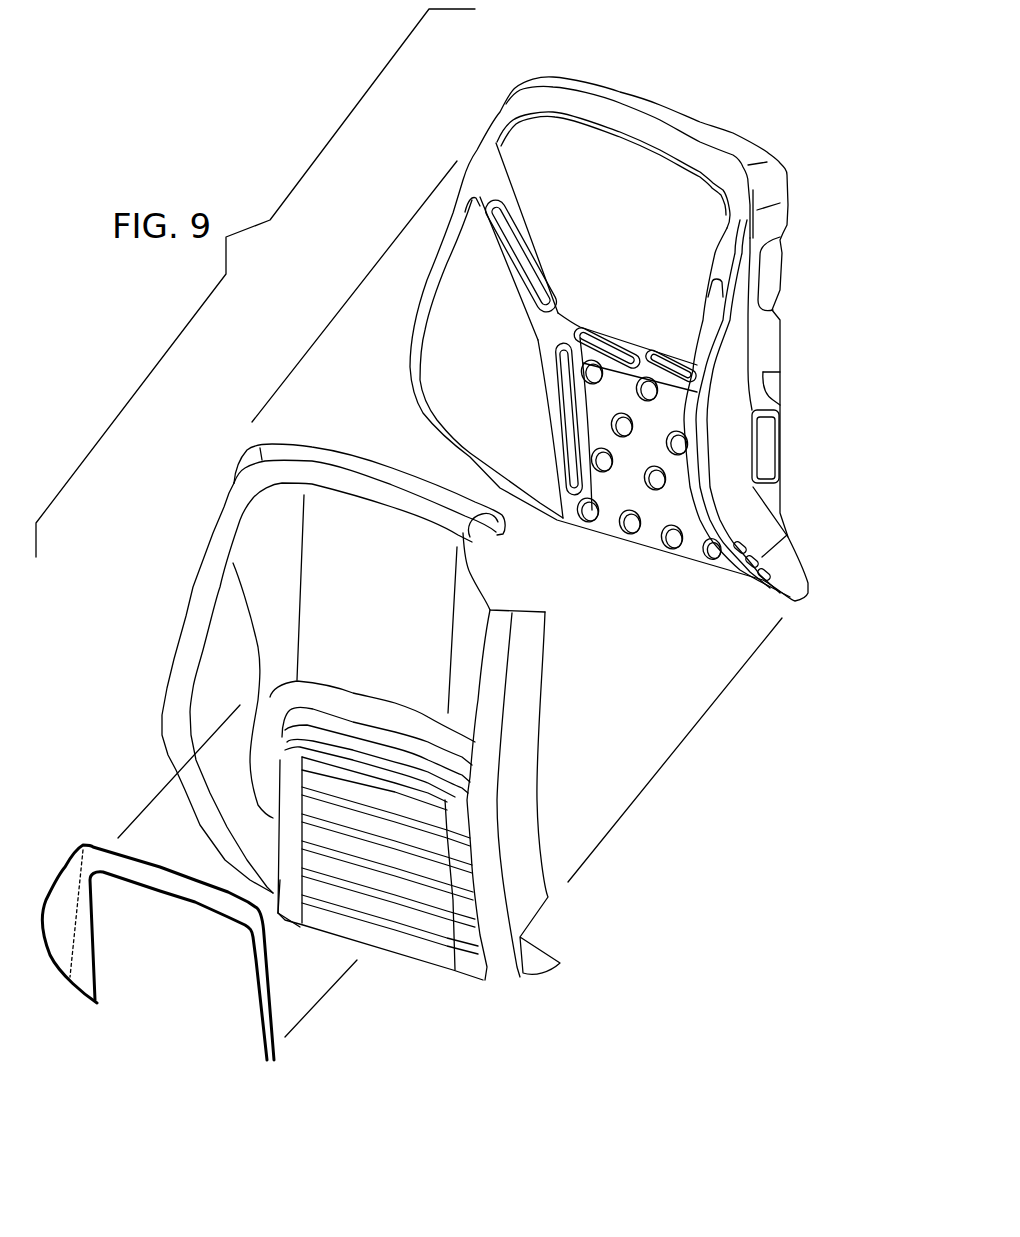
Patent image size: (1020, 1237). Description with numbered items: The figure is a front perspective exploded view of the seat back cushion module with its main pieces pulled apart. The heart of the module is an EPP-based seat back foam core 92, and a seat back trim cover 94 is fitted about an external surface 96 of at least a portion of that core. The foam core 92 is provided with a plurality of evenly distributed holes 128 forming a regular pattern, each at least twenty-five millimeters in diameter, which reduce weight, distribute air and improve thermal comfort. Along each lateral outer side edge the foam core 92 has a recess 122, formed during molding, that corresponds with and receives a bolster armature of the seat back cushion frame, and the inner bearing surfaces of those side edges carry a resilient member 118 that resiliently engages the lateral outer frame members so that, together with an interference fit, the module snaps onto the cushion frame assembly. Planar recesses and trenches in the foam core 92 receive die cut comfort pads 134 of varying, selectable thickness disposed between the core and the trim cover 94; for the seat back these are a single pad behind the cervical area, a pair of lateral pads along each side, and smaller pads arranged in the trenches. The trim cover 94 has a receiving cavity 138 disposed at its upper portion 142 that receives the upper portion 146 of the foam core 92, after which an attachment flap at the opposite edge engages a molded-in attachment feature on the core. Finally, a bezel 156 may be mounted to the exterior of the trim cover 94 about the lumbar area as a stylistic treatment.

The external surface 96 is at (480, 168).
The upper portion 146 is at (627, 120).
The die cut comfort pad 134 is at (678, 187).
The recess 122 is at (762, 372).
The seat back foam core 92 is at (733, 430).
The resilient member 118 is at (767, 457).
The evenly distributed holes 128 is at (667, 547).
The upper portion 142 is at (312, 477).
The receiving cavity 138 is at (480, 540).
The seat back trim cover 94 is at (517, 737).
The bezel 156 is at (165, 887).